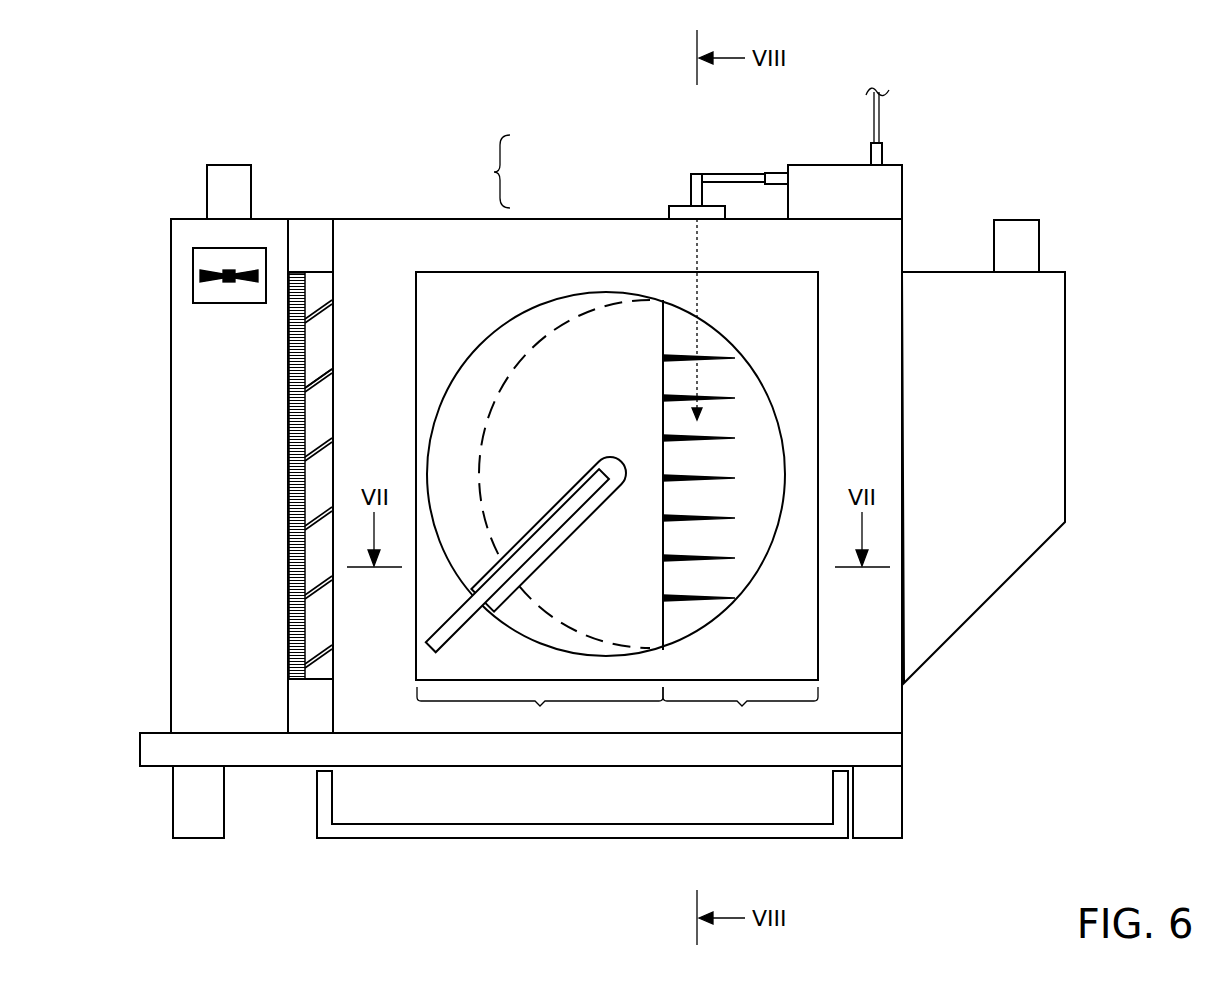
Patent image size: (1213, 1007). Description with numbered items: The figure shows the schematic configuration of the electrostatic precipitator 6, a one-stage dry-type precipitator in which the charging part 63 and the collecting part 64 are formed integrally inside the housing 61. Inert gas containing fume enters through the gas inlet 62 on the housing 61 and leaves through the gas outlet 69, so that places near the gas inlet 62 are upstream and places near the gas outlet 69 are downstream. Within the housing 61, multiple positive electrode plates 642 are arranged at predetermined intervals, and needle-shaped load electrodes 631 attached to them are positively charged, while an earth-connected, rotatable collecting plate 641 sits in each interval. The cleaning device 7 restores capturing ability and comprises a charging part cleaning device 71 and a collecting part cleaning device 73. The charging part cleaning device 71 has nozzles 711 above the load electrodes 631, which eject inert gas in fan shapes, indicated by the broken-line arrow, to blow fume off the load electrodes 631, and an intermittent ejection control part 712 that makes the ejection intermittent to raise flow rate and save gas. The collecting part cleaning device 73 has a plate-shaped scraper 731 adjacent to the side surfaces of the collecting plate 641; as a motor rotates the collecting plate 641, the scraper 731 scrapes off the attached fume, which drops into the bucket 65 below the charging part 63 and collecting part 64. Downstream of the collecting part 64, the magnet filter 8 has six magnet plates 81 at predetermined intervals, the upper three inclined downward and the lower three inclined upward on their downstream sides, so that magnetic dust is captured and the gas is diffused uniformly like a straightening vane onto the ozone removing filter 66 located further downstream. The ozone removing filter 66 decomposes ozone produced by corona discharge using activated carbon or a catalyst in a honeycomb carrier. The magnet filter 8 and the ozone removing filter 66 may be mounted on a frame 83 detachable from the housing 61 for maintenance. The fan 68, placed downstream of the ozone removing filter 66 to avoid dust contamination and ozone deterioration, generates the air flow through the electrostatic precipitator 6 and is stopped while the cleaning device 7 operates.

The electrostatic precipitator 6 is at (248, 90).
The gas outlet 69 is at (238, 170).
The frame 83 is at (303, 226).
The housing 61 is at (432, 234).
The cleaning device 7 is at (492, 171).
The charging part cleaning device 71 is at (672, 128).
The collecting part cleaning device 73 is at (556, 464).
The scraper 731 is at (460, 633).
The nozzles 711 is at (670, 206).
The intermittent ejection control part 712 is at (813, 173).
The gas inlet 62 is at (1030, 228).
The magnet filter 8 is at (352, 315).
The magnet plates 81 is at (320, 384).
The fan 68 is at (217, 300).
The ozone removing filter 66 is at (290, 565).
The positive electrode plates 642 is at (470, 367).
The collecting plate 641 is at (743, 378).
The collecting part 64 is at (540, 710).
The charging part 63 is at (740, 516).
The load electrodes 631 is at (702, 598).
The bucket 65 is at (412, 838).